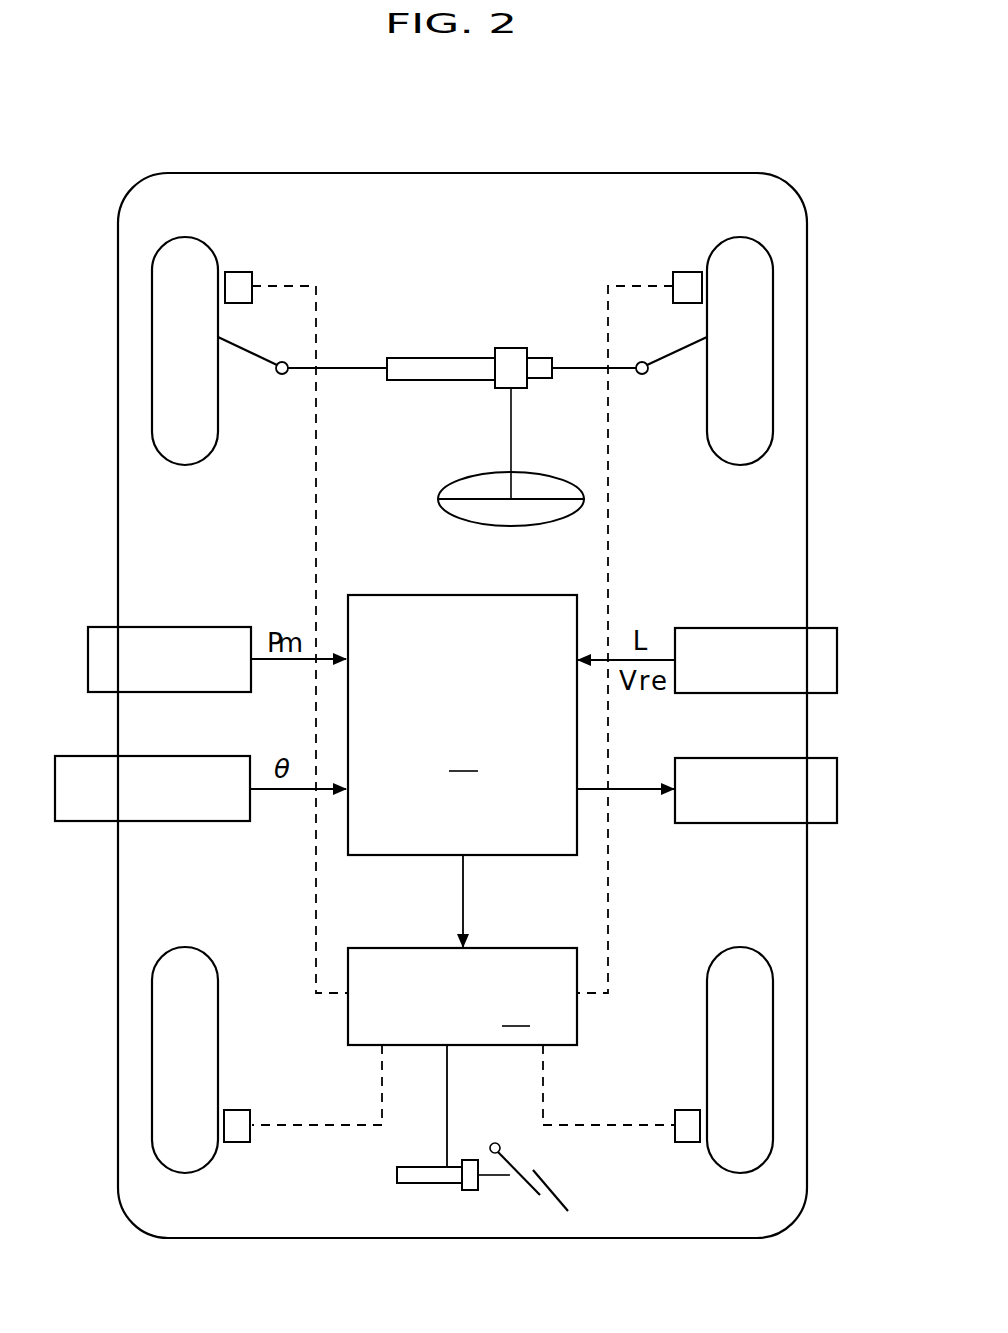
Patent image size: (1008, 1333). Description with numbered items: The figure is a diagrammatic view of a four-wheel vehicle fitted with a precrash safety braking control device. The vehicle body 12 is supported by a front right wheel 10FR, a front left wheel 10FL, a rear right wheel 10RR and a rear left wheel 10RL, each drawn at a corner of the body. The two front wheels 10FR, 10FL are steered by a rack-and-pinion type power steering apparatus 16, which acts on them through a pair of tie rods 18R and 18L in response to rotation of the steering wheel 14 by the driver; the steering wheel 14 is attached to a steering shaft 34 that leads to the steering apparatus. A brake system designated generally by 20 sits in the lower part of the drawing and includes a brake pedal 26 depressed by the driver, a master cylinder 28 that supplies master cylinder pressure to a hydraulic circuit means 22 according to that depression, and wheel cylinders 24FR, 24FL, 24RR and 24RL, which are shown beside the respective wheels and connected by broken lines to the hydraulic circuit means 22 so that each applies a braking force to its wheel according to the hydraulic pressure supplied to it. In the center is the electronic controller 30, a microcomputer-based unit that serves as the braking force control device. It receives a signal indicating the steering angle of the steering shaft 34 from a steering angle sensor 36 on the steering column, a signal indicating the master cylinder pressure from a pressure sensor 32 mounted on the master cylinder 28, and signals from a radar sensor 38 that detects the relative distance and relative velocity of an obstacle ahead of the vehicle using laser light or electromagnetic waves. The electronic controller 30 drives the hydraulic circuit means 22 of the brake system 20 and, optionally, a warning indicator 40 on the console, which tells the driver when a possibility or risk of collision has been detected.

The front left wheel 10FL is at (152, 368).
The front right wheel 10FR is at (773, 368).
The rear left wheel 10RL is at (152, 1073).
The rear right wheel 10RR is at (773, 1073).
The vehicle body 12 is at (807, 562).
The steering wheel 14 is at (513, 527).
The rack-and-pinion type power steering apparatus 16 is at (502, 337).
The tie rod 18L is at (238, 345).
The tie rod 18R is at (682, 342).
The brake system 20 is at (459, 1140).
The hydraulic circuit means 22 is at (462, 996).
The wheel cylinder 24FL is at (238, 280).
The wheel cylinder 24FR is at (688, 280).
The wheel cylinder 24RL is at (237, 1120).
The wheel cylinder 24RR is at (688, 1120).
The brake pedal 26 is at (560, 1197).
The master cylinder 28 is at (418, 1183).
The electronic controller 30 is at (462, 725).
The pressure sensor 32 is at (185, 627).
The steering shaft 34 is at (510, 428).
The steering angle sensor 36 is at (185, 821).
The radar sensor 38 is at (742, 628).
The warning indicator 40 is at (837, 790).